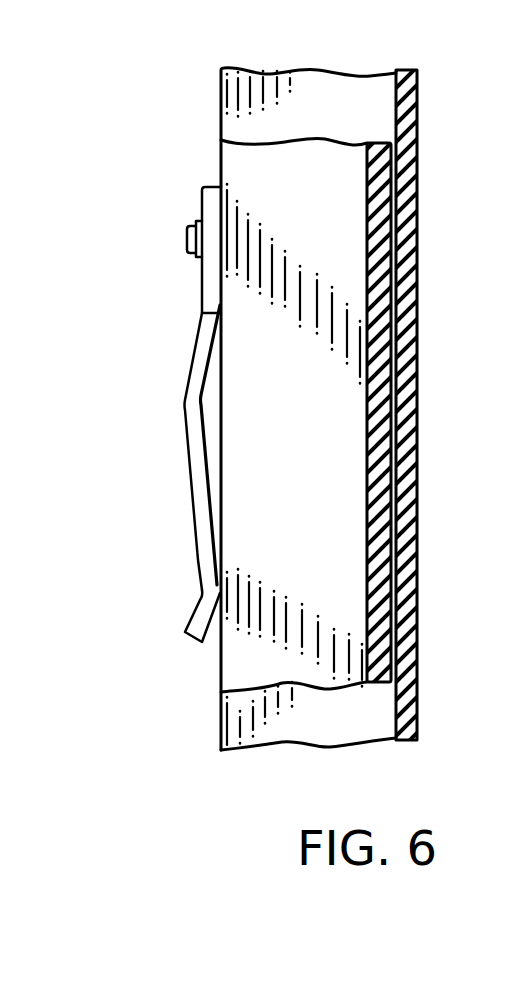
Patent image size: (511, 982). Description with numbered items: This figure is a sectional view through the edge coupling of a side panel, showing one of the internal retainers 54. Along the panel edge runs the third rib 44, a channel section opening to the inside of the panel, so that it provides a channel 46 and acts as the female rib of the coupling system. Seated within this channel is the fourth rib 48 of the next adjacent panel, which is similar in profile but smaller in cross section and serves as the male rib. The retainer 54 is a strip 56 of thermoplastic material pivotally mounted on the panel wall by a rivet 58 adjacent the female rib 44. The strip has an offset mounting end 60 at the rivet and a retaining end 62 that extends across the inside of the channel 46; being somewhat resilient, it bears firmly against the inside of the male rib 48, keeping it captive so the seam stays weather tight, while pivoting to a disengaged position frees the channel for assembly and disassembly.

The third rib 44 is at (421, 661).
The channel 46 is at (393, 98).
The fourth rib 48 is at (364, 174).
The retainer 54 is at (157, 473).
The retainer strip 56 is at (188, 381).
The rivet 58 is at (186, 231).
The mounting end 60 is at (203, 275).
The retaining end 62 is at (192, 608).